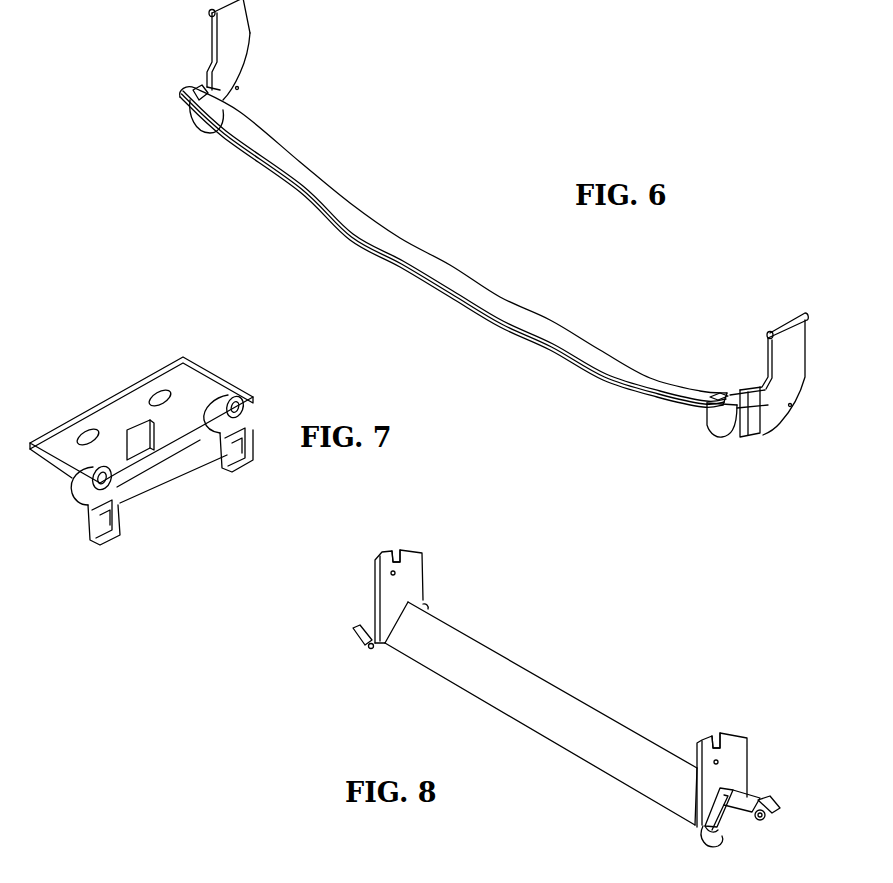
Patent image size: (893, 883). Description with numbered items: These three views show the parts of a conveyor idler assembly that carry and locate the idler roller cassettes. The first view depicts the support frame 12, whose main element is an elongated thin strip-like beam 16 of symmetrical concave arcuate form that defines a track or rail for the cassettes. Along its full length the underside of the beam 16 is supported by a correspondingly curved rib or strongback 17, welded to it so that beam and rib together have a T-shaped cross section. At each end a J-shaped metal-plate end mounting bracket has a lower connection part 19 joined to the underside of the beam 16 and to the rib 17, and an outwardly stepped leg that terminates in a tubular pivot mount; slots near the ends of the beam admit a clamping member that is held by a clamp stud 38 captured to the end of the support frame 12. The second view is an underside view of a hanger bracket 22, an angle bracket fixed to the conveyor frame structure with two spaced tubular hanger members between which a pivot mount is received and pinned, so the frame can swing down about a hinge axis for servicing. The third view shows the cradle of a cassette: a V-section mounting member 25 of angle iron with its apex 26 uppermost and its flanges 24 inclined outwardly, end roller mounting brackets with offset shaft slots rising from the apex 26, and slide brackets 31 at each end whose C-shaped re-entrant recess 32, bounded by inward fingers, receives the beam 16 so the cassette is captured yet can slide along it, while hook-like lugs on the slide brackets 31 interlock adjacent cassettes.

In FIG. 6, the support frame 12 is at (482, 277).
In FIG. 6, the main elongated support member or beam 16 is at (400, 240).
In FIG. 6, the curved rib or strongback 17 is at (495, 330).
In FIG. 6, the lower connection part 19 is at (712, 425).
In FIG. 7, the hanger bracket 22 is at (107, 398).
In FIG. 8, the flange 24 is at (563, 737).
In FIG. 8, the main elongated mounting member 25 is at (560, 677).
In FIG. 8, the apex 26 is at (612, 717).
In FIG. 8, the slide bracket 31 is at (748, 796).
In FIG. 8, the C-shaped re-entrant recess 32 is at (747, 817).
In FIG. 6, the clamp stud 38 is at (735, 427).